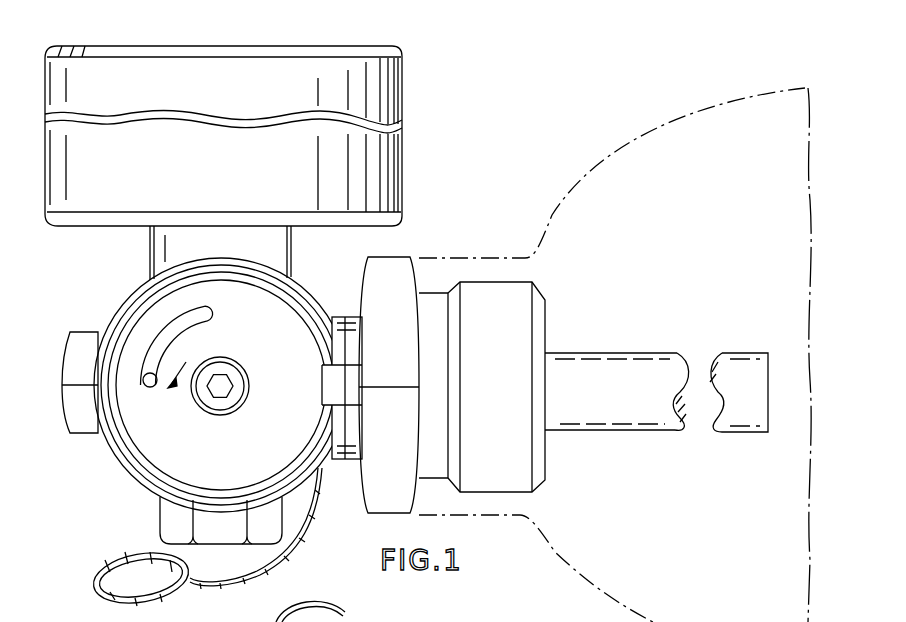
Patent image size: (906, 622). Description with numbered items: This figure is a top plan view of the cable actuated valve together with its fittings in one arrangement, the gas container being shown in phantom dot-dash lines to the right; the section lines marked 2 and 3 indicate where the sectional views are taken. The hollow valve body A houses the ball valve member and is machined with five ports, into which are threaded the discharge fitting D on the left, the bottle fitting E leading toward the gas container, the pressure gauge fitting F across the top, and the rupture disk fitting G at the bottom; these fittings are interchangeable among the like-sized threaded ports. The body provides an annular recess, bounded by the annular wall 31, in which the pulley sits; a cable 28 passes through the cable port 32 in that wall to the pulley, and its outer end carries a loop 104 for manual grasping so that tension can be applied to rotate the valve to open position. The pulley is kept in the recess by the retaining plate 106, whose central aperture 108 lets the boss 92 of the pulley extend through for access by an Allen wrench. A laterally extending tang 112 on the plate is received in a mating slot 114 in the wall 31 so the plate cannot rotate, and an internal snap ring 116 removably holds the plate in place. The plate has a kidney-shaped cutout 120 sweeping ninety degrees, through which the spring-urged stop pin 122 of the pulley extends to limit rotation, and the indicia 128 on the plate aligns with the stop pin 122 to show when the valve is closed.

The section line 2- 2 is at (35, 88).
The section line 3- 3 is at (492, 610).
The cable 28 is at (312, 530).
The annular wall 31 is at (303, 296).
The cable port 32 is at (656, 487).
The boss 92 is at (240, 377).
The loop 104 is at (152, 604).
The retaining plate 106 is at (236, 459).
The central aperture 108 is at (242, 400).
The tang 112 is at (334, 379).
The slot 114 is at (336, 406).
The snap ring 116 is at (259, 286).
The kidney-shaped cutout 120 is at (194, 333).
The stop pin 122 is at (154, 388).
The indicia 128 is at (187, 366).
The hollow body A is at (215, 385).
The discharge fitting D is at (79, 330).
The bottle fitting E is at (508, 492).
The pressure gauge fitting F is at (405, 92).
The rupture disk fitting G is at (162, 523).